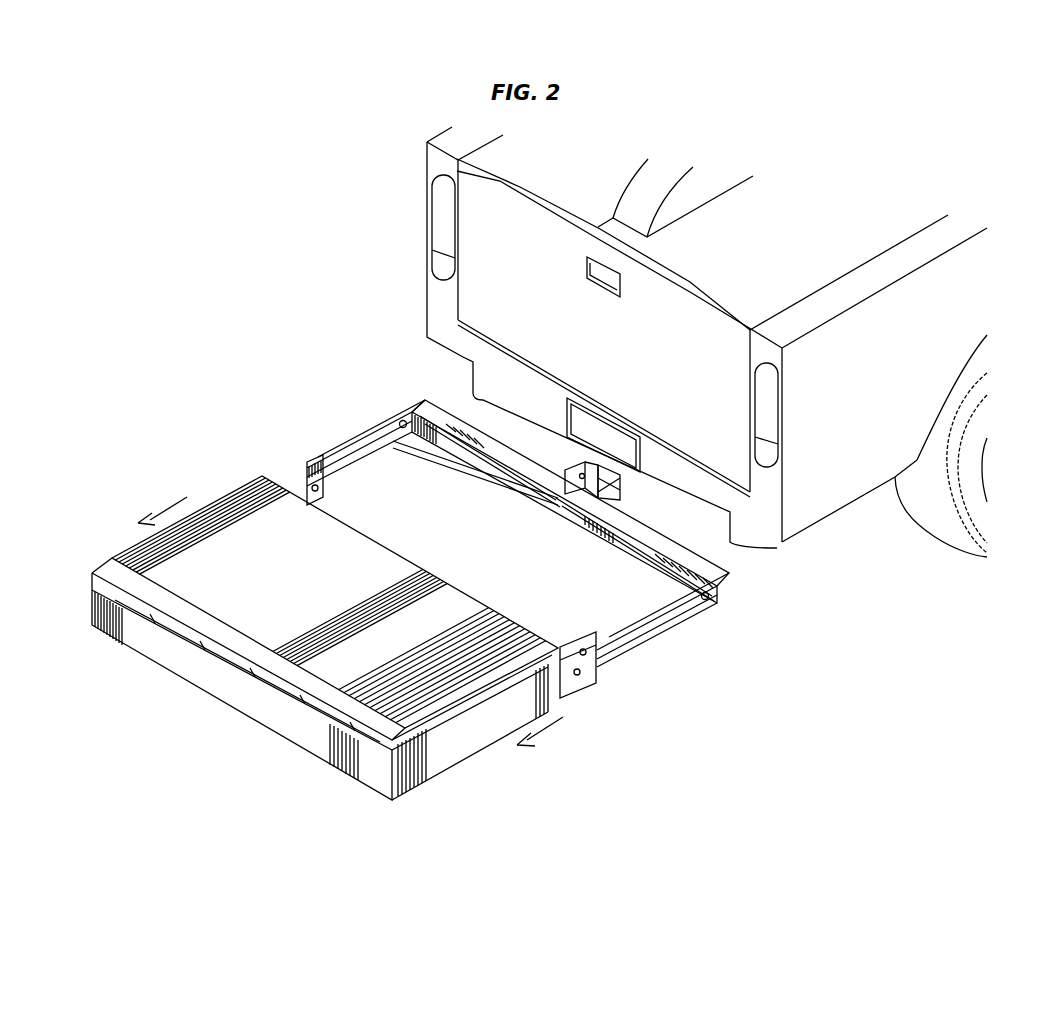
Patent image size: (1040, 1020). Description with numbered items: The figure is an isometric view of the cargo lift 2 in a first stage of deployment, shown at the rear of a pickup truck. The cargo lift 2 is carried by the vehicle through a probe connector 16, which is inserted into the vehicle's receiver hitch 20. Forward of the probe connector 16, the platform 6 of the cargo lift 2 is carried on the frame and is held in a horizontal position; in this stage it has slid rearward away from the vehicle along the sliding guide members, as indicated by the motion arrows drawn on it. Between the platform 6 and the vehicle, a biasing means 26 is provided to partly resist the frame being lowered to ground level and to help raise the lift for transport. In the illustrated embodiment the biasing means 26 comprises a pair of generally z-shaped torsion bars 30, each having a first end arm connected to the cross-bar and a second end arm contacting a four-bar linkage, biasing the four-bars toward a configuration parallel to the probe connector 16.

The cargo lift 2 is at (226, 462).
The platform 6 is at (338, 616).
The probe connector 16 is at (575, 477).
The receiver hitch 20 is at (607, 480).
The biasing means 26 is at (432, 460).
The torsion bar 30 is at (470, 470).